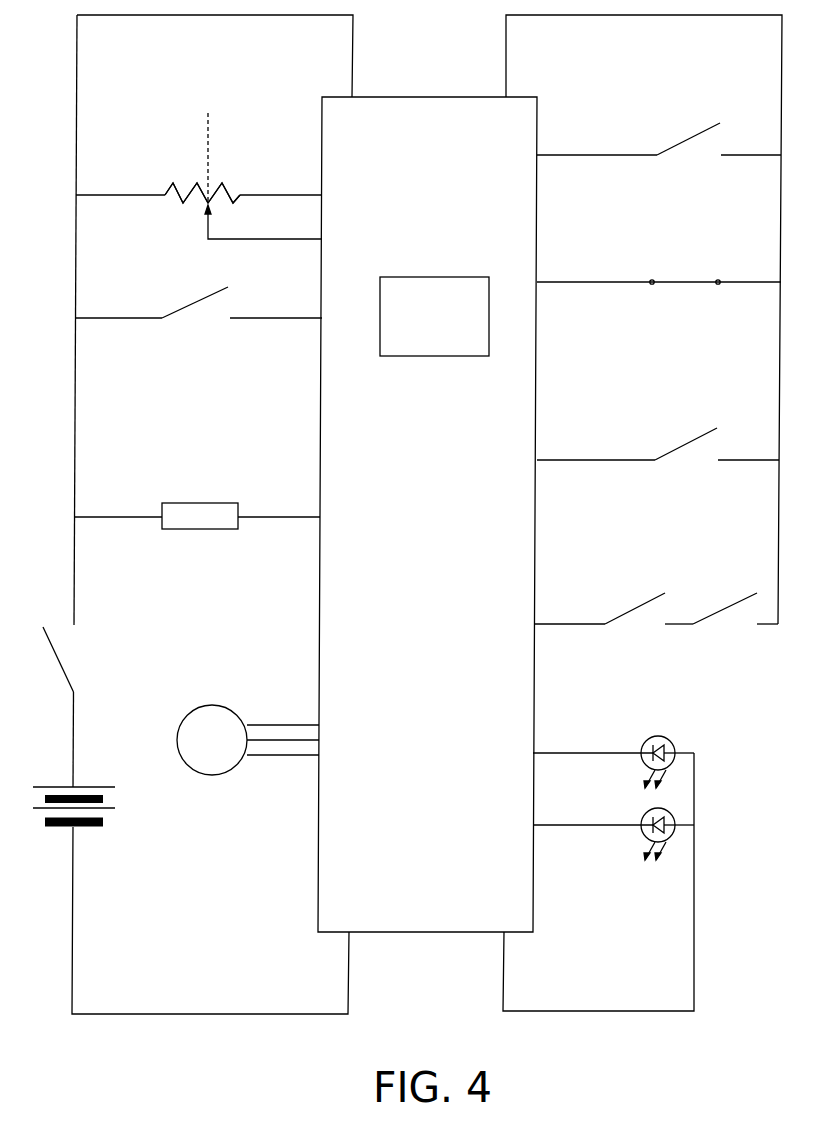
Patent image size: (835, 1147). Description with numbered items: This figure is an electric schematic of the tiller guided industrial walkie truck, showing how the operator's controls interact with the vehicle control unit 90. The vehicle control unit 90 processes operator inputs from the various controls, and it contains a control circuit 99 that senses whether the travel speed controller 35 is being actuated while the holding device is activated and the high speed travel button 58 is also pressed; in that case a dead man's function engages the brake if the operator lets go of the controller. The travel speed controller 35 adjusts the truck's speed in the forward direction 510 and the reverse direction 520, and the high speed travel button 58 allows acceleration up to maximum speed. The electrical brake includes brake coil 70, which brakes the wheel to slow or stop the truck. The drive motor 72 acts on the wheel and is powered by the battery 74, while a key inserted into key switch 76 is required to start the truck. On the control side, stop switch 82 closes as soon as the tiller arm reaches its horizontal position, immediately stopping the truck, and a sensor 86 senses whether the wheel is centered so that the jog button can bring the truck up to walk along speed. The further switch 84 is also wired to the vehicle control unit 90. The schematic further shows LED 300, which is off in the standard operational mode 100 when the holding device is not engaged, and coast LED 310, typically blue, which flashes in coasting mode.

The travel speed controller 35 is at (199, 161).
The reverse direction 520 is at (176, 167).
The forward direction 510 is at (235, 167).
The high speed travel button 58 is at (199, 326).
The brake coil 70 is at (198, 499).
The key switch 76 is at (78, 659).
The battery 74 is at (98, 804).
The drive motor 72 is at (225, 748).
The vehicle control unit 90 is at (440, 809).
The control circuit 99 is at (447, 327).
The stop switch 82 is at (659, 262).
The switch 84 is at (658, 426).
The operational mode 100 is at (612, 589).
The sensor 86 is at (721, 590).
The coast LED 310 is at (613, 744).
The LED 300 is at (673, 813).